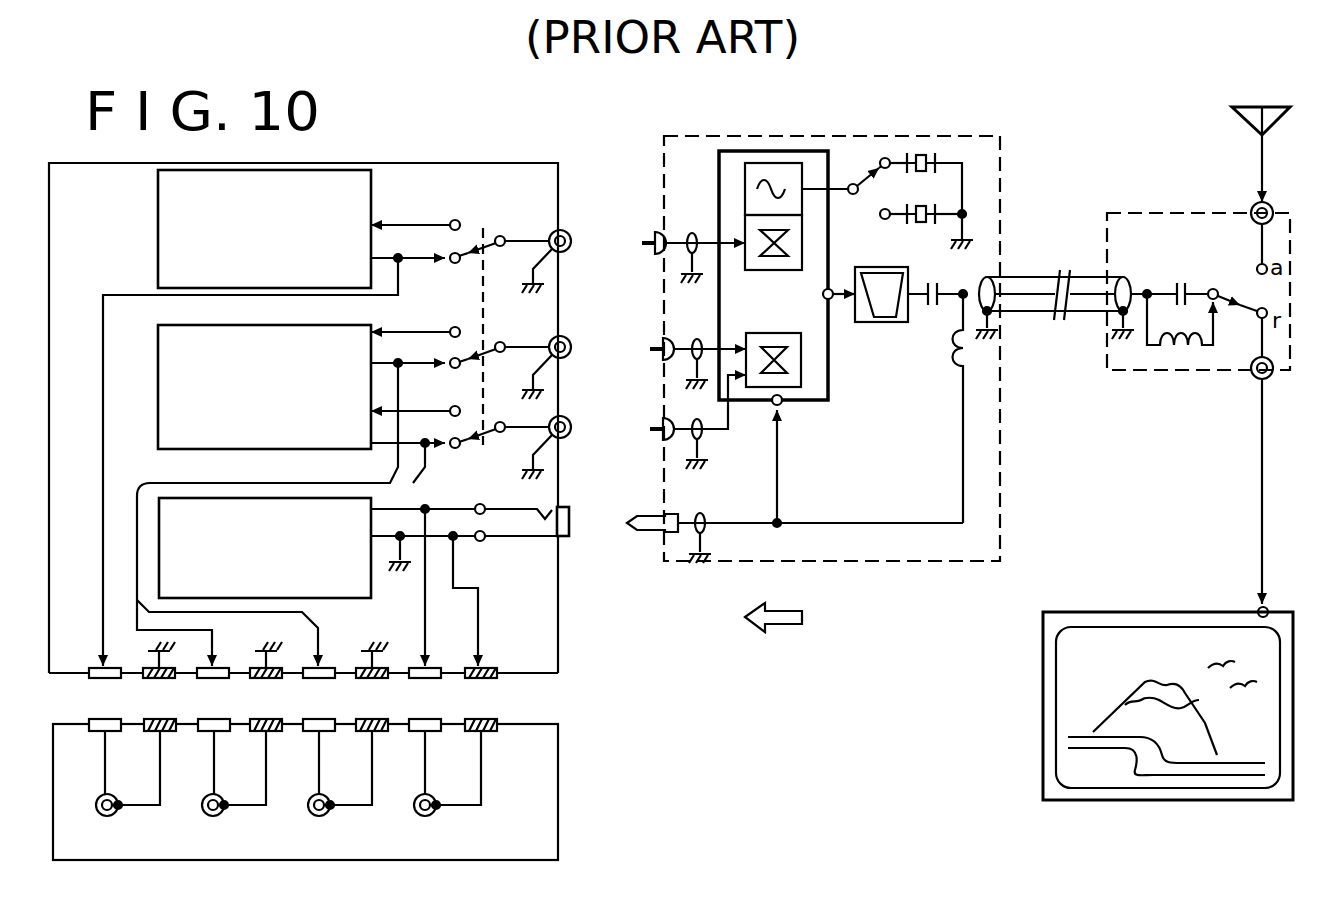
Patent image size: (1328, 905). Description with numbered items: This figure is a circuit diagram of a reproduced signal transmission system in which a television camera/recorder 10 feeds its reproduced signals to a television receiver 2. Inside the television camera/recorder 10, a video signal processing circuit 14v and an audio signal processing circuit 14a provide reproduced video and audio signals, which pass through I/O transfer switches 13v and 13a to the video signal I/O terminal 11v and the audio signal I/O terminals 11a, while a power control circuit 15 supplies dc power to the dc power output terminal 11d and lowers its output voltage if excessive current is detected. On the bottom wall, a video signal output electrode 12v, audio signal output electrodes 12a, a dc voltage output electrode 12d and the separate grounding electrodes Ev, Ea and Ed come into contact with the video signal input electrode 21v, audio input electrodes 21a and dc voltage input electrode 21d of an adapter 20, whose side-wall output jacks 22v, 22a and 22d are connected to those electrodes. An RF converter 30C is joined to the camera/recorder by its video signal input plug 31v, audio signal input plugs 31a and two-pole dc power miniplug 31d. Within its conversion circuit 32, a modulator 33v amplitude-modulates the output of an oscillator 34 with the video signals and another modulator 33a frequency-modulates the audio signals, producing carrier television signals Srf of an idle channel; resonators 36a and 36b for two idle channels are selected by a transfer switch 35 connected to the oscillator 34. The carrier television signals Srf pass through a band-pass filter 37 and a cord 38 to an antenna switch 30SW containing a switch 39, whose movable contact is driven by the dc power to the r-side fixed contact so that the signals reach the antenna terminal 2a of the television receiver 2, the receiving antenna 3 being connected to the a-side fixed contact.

The television camera/recorder 10 is at (488, 143).
The video signal processing circuit 14v is at (158, 205).
The audio signal processing circuit 14a is at (158, 380).
The power control circuit 15 is at (350, 598).
The I/O transfer switch 13v is at (478, 232).
The I/O transfer switch 13a is at (484, 436).
The video signal I/O terminal 11v is at (567, 233).
The audio signal I/O terminals 11a is at (572, 420).
The dc power output terminal 11d is at (572, 520).
The video signal output electrode 12v is at (102, 681).
The video signal grounding electrode Ev is at (160, 681).
The audio signal output electrodes 12a is at (215, 681).
The audio signal grounding electrode Ea is at (272, 681).
The dc voltage output electrode 12d is at (428, 681).
The dc voltage grounding electrode Ed is at (485, 680).
The adapter 20 is at (558, 842).
The video signal input electrode 21v is at (107, 736).
The audio input electrodes 21a is at (208, 736).
The dc voltage input electrode 21d is at (423, 736).
The video output terminal (jack) 22v is at (116, 816).
The audio output terminal (jack) 22a is at (310, 816).
The dc output terminal (jack) 22d is at (444, 816).
The RF converter 30C is at (878, 561).
The video signal input terminal (plug) 31v is at (650, 253).
The audio signal input terminals (plug) 31a is at (657, 417).
The dc power input terminal (2-pole miniplug) 31d is at (648, 535).
The conversion circuit 32 is at (832, 366).
The modulator 33v is at (764, 270).
The modulator 33a is at (802, 378).
The oscillator 34 is at (745, 174).
The transfer switch 35 is at (870, 196).
The resonator 36a is at (940, 156).
The resonator 36b is at (940, 208).
The band-pass filter 37 is at (884, 322).
The cord 38 is at (1032, 313).
The carrier television signals Srf is at (967, 290).
The antenna switch 30SW is at (1197, 370).
The switch 39 is at (1242, 302).
The receiving antenna 3 is at (1237, 119).
The television receiver 2 is at (1043, 782).
The antenna terminal 2a is at (1258, 608).